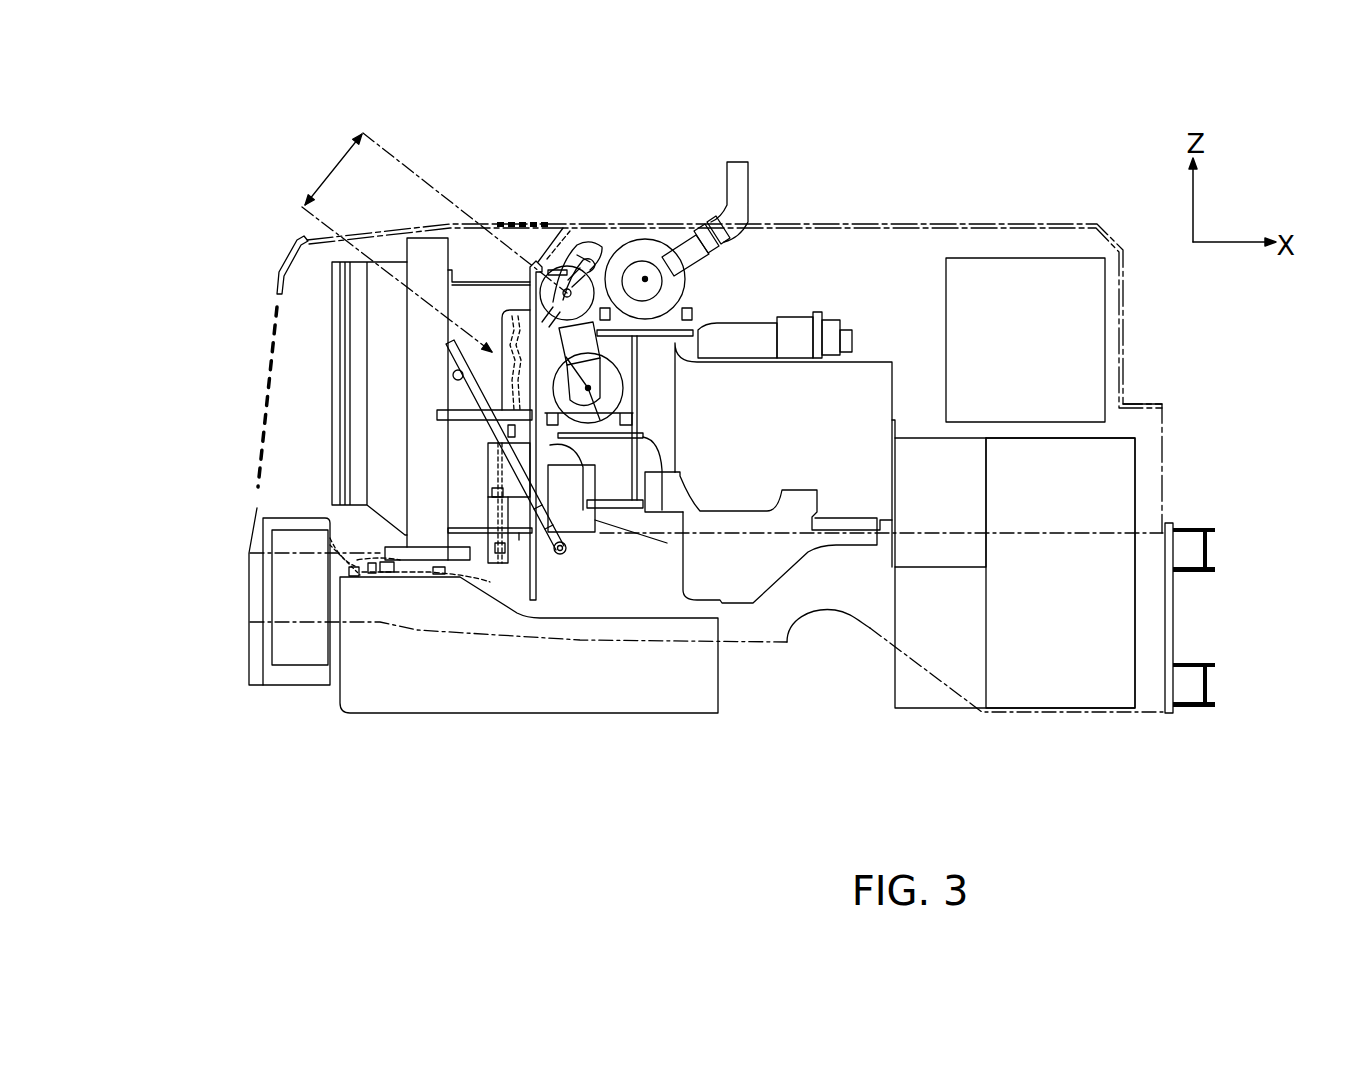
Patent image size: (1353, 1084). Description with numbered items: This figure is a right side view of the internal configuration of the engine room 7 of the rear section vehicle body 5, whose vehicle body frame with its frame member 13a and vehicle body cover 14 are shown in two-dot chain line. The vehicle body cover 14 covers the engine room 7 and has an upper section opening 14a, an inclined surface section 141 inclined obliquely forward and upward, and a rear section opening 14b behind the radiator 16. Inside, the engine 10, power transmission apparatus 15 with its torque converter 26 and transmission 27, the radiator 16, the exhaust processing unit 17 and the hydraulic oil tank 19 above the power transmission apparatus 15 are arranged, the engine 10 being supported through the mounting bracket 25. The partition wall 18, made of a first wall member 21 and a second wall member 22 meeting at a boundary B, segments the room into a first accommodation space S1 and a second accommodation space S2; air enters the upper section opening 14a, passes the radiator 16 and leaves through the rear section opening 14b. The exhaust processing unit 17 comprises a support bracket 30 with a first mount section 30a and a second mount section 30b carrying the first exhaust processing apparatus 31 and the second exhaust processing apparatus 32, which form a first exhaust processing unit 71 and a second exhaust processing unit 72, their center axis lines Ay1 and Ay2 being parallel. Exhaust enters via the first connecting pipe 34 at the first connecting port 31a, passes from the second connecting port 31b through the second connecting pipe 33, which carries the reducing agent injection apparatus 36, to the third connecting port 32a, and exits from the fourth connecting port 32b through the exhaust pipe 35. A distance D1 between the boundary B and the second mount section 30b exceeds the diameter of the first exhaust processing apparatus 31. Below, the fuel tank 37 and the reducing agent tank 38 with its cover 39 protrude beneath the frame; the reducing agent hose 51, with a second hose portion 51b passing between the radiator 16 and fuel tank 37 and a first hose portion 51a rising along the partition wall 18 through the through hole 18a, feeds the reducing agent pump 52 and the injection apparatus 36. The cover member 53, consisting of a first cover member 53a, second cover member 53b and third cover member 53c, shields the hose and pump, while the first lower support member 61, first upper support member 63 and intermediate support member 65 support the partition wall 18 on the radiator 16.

The rear section vehicle body 5 is at (869, 160).
The engine room 7 is at (931, 256).
The engine 10 is at (890, 420).
The frame member 13a is at (1089, 520).
The vehicle body cover 14 is at (908, 224).
The upper section opening 14a is at (542, 240).
The rear section opening 14b is at (250, 350).
The inclined surface section 141 is at (520, 215).
The power transmission apparatus 15 is at (1006, 428).
The radiator 16 is at (427, 245).
The exhaust processing unit 17 is at (598, 255).
The partition wall 18 is at (617, 450).
The through hole 18a is at (345, 244).
The hydraulic oil tank 19 is at (1105, 332).
The first wall member 21 is at (534, 600).
The second wall member 22 is at (530, 305).
The mounting bracket 25 is at (793, 513).
The torque converter 26 is at (937, 557).
The transmission 27 is at (1047, 698).
The exhaust processing apparatus support bracket 30 is at (893, 367).
The first mount section 30a is at (648, 440).
The second mount section 30b is at (613, 310).
The first exhaust processing apparatus 31 is at (613, 415).
The first connecting port 31a is at (607, 405).
The second connecting port 31b is at (605, 362).
The second exhaust processing apparatus 32 is at (646, 276).
The third connecting port 32a is at (538, 262).
The fourth connecting port 32b is at (610, 317).
The second connecting pipe 33 is at (537, 245).
The first connecting pipe 34 is at (757, 340).
The exhaust pipe 35 is at (732, 168).
The reducing agent injection apparatus 36 is at (541, 277).
The fuel tank 37 is at (710, 673).
The reducing agent tank 38 is at (293, 642).
The cover 39 is at (297, 517).
The reducing agent hose 51 is at (497, 595).
The first hose portion 51a is at (537, 400).
The second hose portion 51b is at (390, 580).
The reducing agent pump 52 is at (485, 460).
The cover member 53 is at (452, 343).
The first cover member 53a is at (540, 380).
The second cover member 53b is at (480, 480).
The third cover member 53c is at (519, 540).
The first lower support member 61 is at (450, 585).
The first upper support member 63 is at (534, 307).
The intermediate support member 65 is at (460, 417).
The first exhaust processing unit 71 is at (663, 770).
The second exhaust processing unit 72 is at (687, 142).
The boundary B is at (552, 444).
The center axis line Ay1 is at (592, 425).
The center axis line Ay2 is at (604, 240).
The distance D1 is at (431, 242).
The first accommodation space S1 is at (917, 322).
The second accommodation space S2 is at (489, 265).